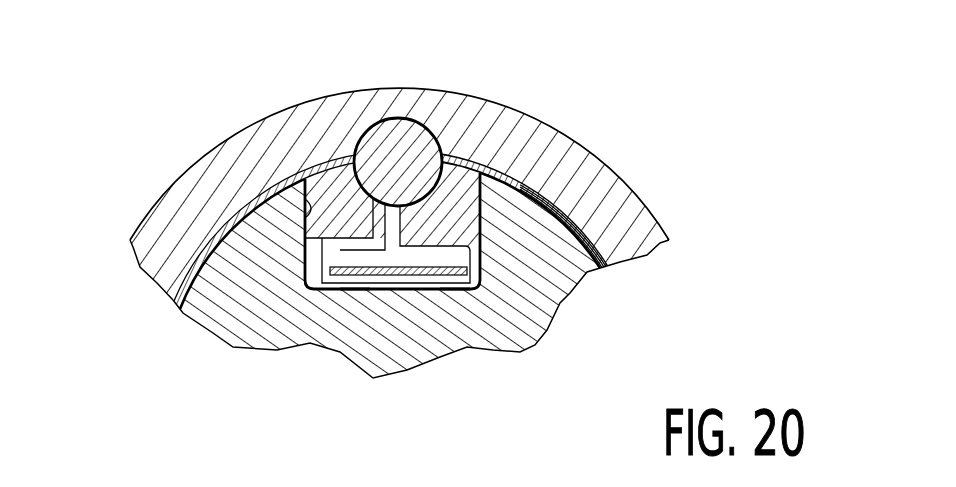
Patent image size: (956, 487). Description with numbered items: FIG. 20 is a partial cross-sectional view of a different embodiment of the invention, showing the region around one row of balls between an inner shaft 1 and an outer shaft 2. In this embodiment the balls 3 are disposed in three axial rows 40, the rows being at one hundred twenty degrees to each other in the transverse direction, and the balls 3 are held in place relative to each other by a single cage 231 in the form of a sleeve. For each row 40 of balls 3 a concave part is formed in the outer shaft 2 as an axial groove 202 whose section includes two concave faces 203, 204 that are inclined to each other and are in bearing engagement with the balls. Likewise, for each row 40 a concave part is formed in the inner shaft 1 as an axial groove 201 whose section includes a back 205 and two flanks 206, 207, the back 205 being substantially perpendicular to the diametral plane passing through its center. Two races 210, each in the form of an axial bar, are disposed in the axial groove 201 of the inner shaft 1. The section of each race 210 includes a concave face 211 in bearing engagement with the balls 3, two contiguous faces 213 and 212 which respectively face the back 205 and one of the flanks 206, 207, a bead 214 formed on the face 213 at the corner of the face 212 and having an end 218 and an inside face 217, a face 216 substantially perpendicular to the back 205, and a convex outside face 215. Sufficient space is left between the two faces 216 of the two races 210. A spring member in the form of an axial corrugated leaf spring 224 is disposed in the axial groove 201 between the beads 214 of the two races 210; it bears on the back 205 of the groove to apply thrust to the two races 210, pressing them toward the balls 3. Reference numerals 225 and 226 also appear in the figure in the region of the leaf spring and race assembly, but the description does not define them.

The inner shaft 1 is at (543, 302).
The outer shaft 2 is at (587, 180).
The balls 3 is at (383, 132).
The axial rows 40 is at (413, 143).
The axial groove 201 is at (478, 300).
The axial groove 202 is at (421, 116).
The concave face 203 is at (368, 128).
The concave face 204 is at (455, 135).
The back 205 is at (328, 292).
The flank 206 is at (205, 192).
The flank 207 is at (487, 190).
The races 210 is at (243, 140).
The concave face 211 is at (353, 188).
The face 212 is at (187, 223).
The face 213 is at (357, 290).
The bead 214 is at (317, 245).
The convex outside face 215 is at (307, 182).
The face 216 is at (498, 345).
The inside face 217 is at (312, 335).
The end 218 is at (272, 343).
The axial corrugated leaf spring 224 is at (424, 252).
The spring 225 is at (410, 278).
The slot 226 is at (458, 296).
The cage 231 is at (597, 222).